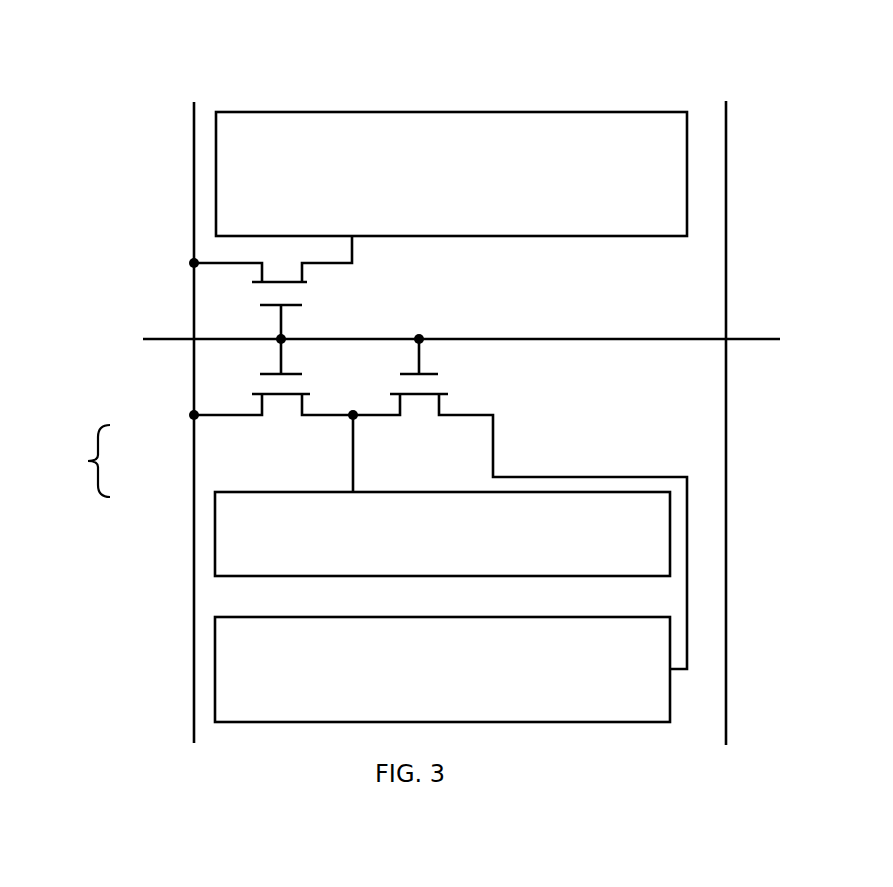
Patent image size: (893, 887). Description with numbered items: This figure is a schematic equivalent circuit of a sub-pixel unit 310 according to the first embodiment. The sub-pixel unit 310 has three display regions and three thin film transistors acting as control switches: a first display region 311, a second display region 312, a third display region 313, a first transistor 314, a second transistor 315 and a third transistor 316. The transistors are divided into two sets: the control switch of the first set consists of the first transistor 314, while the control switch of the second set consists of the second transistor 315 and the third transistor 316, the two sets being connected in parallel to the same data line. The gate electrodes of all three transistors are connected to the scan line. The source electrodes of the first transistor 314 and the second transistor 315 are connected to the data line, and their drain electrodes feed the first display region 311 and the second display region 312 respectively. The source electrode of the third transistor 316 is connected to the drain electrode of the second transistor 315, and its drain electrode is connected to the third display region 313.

The sub-pixel unit 310 is at (465, 37).
The first display region 311 is at (451, 174).
The second display region 312 is at (442, 534).
The third display region 313 is at (442, 669).
The first transistor 314 is at (226, 312).
The second transistor 315 is at (222, 370).
The third transistor 316 is at (380, 435).